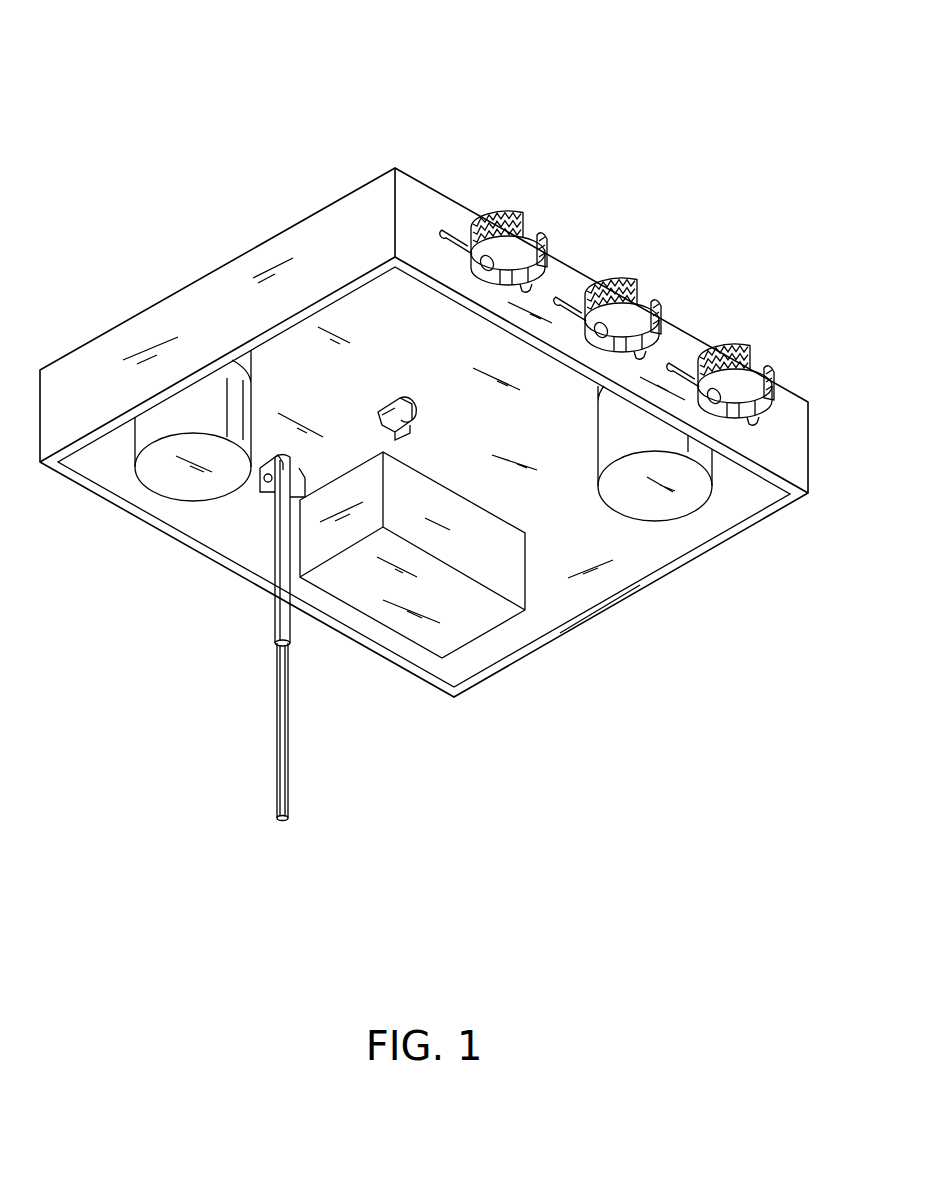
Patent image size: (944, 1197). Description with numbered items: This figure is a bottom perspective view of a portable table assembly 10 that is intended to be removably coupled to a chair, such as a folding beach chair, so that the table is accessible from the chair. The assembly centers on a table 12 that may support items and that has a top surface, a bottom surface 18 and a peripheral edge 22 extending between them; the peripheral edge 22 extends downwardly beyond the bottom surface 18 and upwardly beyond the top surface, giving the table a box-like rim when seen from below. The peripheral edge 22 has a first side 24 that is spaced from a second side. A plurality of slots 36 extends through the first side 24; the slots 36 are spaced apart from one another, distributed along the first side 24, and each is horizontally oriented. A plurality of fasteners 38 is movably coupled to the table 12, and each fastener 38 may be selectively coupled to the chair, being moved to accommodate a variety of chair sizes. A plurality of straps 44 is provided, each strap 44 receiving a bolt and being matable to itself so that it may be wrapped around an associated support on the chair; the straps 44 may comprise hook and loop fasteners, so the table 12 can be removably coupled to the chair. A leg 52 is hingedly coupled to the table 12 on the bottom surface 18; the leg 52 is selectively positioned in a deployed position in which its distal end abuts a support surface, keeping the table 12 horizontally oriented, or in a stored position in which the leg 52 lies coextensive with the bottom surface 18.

The portable table assembly 10 is at (496, 94).
The table 12 is at (395, 167).
The bottom surface 18 is at (358, 323).
The peripheral edge 22 is at (220, 277).
The first side 24 is at (571, 282).
The slots 36 is at (454, 233).
The fasteners 38 is at (540, 216).
The straps 44 is at (502, 213).
The leg 52 is at (280, 622).